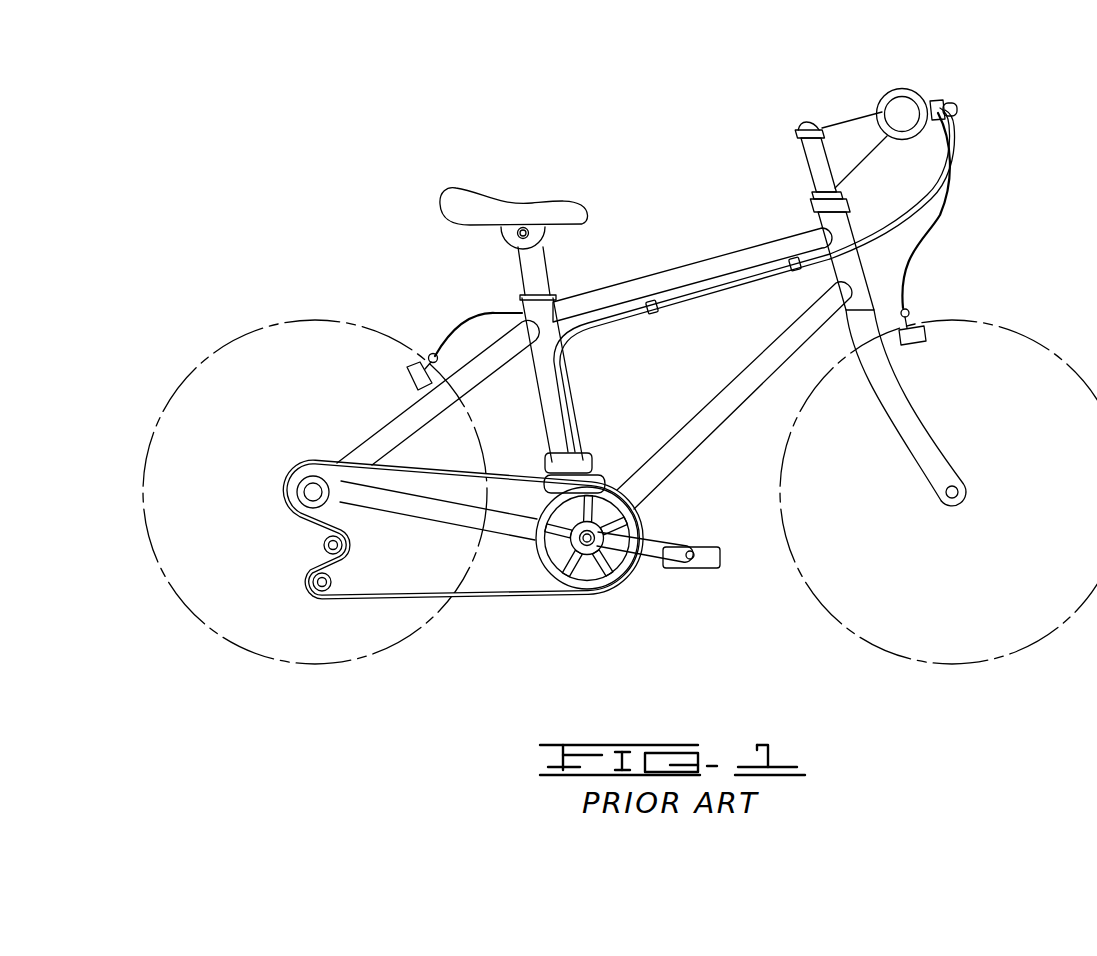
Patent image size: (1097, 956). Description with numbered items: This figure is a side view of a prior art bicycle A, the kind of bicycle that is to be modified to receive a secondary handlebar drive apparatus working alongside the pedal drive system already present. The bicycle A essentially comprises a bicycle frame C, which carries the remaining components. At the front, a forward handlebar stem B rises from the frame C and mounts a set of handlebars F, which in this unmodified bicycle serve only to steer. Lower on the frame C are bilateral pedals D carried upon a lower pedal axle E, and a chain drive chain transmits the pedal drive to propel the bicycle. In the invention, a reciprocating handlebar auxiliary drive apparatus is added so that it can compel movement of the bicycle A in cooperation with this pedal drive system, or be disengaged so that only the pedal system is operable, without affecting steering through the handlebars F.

The bicycle A is at (367, 115).
The forward handlebar stem B is at (806, 160).
The bicycle frame C is at (700, 262).
The bilateral pedals D is at (650, 550).
The lower pedal axle E is at (587, 542).
The set of handlebars F is at (902, 114).